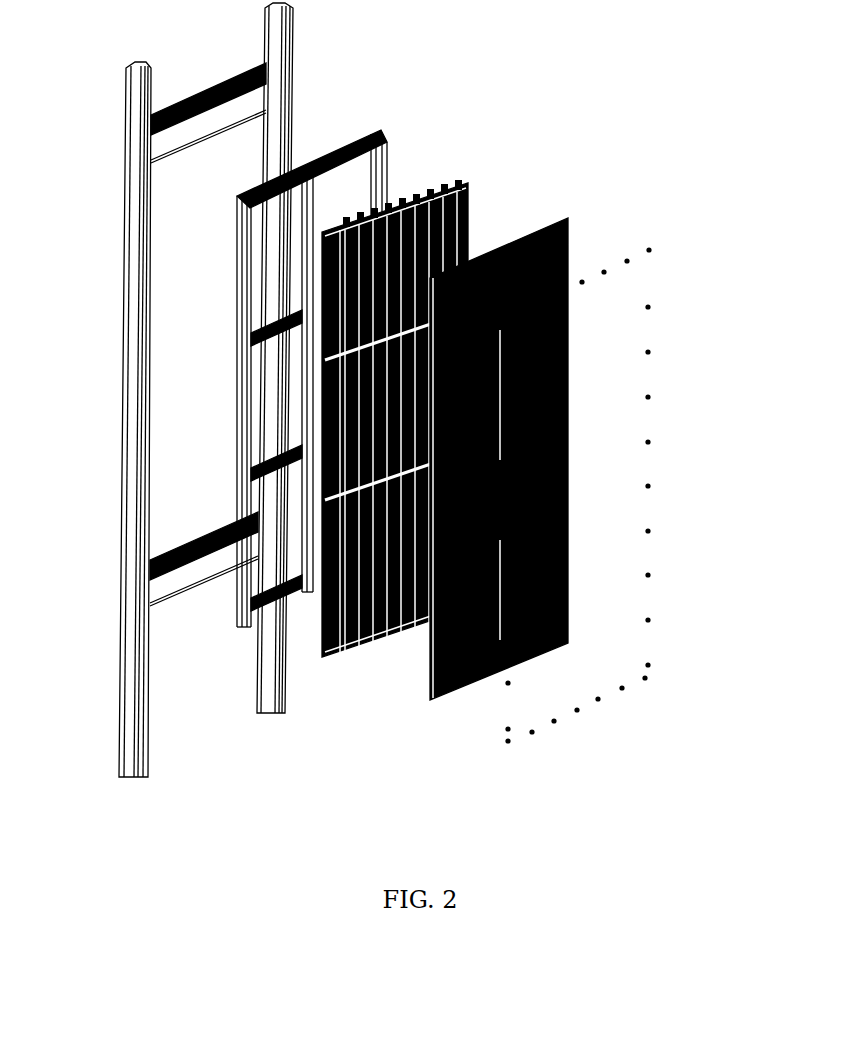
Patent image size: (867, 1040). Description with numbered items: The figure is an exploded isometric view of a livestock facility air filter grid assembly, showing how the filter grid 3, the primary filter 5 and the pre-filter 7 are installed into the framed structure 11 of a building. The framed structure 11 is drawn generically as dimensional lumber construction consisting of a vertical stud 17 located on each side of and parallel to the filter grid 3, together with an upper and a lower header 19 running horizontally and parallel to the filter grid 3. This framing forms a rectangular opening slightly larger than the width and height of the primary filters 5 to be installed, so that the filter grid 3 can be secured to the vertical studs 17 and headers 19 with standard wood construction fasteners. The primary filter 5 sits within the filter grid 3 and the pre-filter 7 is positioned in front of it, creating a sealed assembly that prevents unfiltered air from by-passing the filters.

The filter grid 3 is at (378, 133).
The primary filter 5 is at (470, 180).
The pre-filter 7 is at (566, 214).
The framed structure 11 is at (661, 253).
The vertical stud 17 is at (130, 205).
The header 19 is at (265, 97).